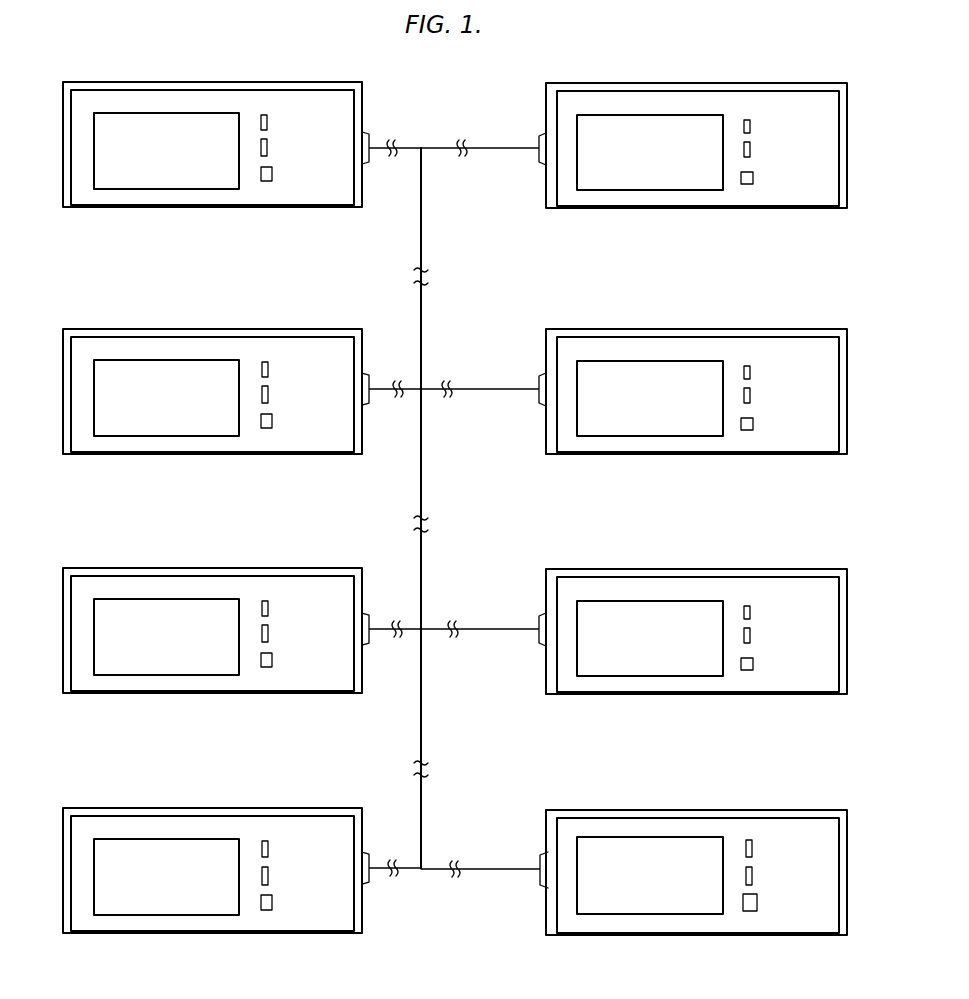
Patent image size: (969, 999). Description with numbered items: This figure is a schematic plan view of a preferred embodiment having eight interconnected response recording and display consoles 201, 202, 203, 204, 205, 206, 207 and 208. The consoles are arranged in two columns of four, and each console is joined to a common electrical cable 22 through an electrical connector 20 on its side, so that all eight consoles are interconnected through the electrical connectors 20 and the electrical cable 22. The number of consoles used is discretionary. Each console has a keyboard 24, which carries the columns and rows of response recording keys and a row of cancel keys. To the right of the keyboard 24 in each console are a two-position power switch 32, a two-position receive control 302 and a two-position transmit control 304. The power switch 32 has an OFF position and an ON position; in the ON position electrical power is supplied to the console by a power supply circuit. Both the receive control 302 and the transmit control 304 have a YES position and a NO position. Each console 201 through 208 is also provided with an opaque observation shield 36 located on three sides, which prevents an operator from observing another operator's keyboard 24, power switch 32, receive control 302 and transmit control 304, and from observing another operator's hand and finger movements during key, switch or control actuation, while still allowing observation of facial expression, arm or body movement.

The response recording and display console 201 is at (143, 98).
The response recording and display console 202 is at (113, 348).
The response recording and display console 203 is at (147, 588).
The response recording and display console 204 is at (143, 830).
The response recording and display console 205 is at (605, 100).
The response recording and display console 206 is at (605, 346).
The response recording and display console 207 is at (605, 586).
The response recording and display console 208 is at (603, 830).
The opaque observation shield 36 is at (363, 90).
The keyboard 24 is at (122, 180).
The transmit control 304 is at (268, 122).
The receive control 302 is at (268, 147).
The power switch 32 is at (273, 174).
The electrical connector 20 is at (365, 165).
The electrical cable 22 is at (422, 324).